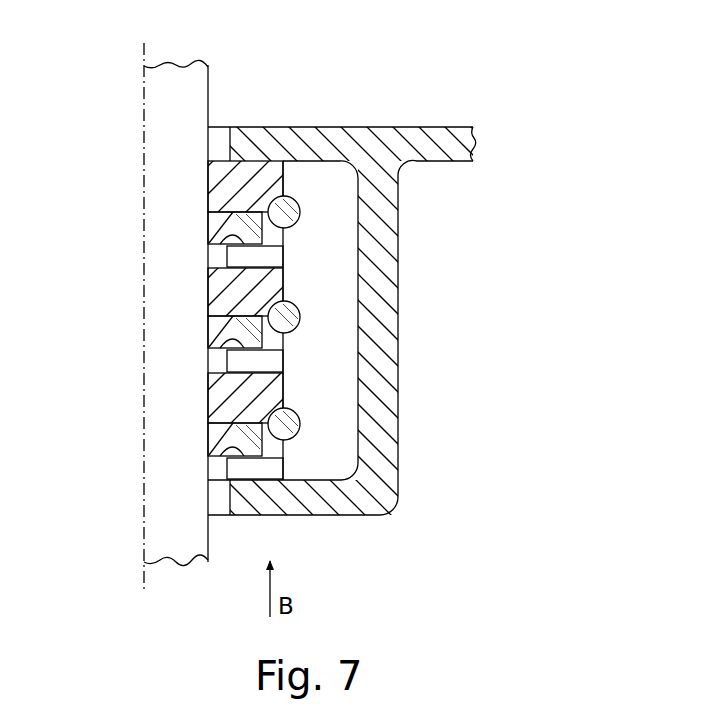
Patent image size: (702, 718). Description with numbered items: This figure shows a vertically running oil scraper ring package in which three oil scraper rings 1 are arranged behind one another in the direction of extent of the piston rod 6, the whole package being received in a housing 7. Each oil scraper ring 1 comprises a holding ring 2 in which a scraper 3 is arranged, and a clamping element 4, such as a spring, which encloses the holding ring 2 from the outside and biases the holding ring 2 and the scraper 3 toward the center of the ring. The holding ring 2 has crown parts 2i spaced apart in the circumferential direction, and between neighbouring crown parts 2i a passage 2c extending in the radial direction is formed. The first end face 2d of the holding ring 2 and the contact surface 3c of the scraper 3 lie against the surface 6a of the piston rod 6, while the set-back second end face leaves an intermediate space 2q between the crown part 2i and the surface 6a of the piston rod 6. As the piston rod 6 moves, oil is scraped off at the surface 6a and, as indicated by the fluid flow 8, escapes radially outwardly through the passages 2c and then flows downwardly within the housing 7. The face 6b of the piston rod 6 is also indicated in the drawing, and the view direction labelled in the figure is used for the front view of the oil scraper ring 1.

The oil scraper ring 1 is at (307, 192).
The holding ring 2 is at (253, 173).
The passage 2c is at (224, 250).
The first end face 2d is at (208, 298).
The crown part 2i is at (209, 391).
The intermediate space 2q is at (208, 365).
The scraper 3 is at (210, 212).
The contact surface 3c is at (203, 345).
The clamping element 4 is at (288, 210).
The piston rod 6 is at (173, 558).
The surface of the piston rod 6a is at (211, 545).
The wall face 6b is at (208, 458).
The housing 7 is at (377, 223).
The fluid flow 8 is at (310, 271).